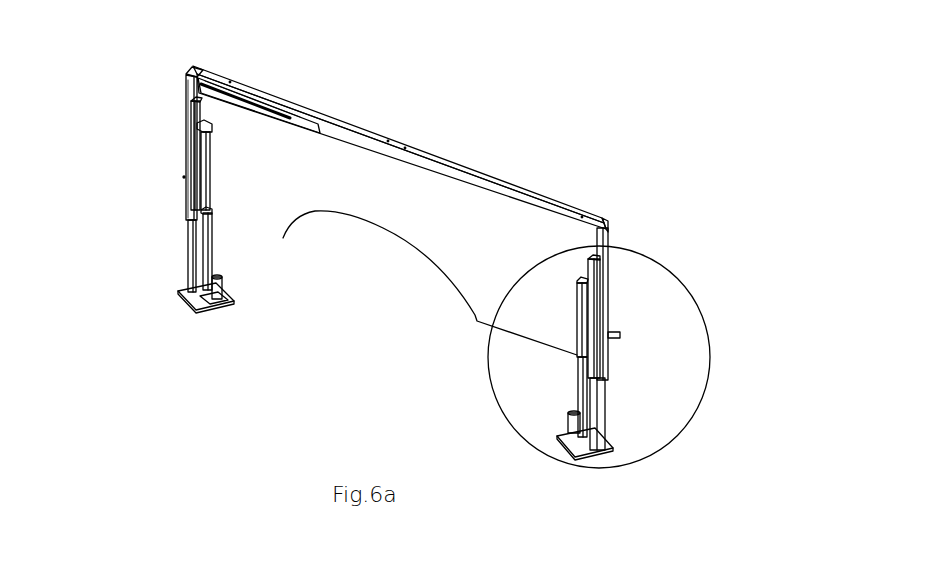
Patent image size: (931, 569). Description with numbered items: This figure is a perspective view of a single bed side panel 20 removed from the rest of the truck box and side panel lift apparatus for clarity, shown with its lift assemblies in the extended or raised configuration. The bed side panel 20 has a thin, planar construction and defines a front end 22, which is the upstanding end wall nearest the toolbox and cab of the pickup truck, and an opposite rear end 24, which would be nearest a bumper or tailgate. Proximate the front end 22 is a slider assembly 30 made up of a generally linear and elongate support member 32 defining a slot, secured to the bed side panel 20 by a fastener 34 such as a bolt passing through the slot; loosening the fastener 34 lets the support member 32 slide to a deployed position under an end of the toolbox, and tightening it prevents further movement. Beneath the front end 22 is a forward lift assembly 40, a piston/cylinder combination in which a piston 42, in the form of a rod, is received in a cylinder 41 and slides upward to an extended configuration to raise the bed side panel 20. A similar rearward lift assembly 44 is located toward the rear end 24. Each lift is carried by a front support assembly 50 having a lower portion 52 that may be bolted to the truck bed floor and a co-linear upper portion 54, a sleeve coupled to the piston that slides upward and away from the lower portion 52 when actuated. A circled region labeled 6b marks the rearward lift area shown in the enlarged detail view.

The bed side panel 20 is at (450, 190).
The front end 22 is at (185, 88).
The rear end 24 is at (608, 233).
The slider assembly 30 is at (263, 93).
The support member 32 is at (312, 125).
The fastener 34 is at (197, 83).
The forward lift assembly 40 is at (225, 258).
The cylinder 41 is at (205, 212).
The piston 42 is at (212, 150).
The rearward lift assembly 44 is at (565, 388).
The front support assembly 50 is at (191, 194).
The lower portion 52 is at (188, 267).
The upper portion 54 is at (185, 158).
The detail view reference 6b is at (658, 335).